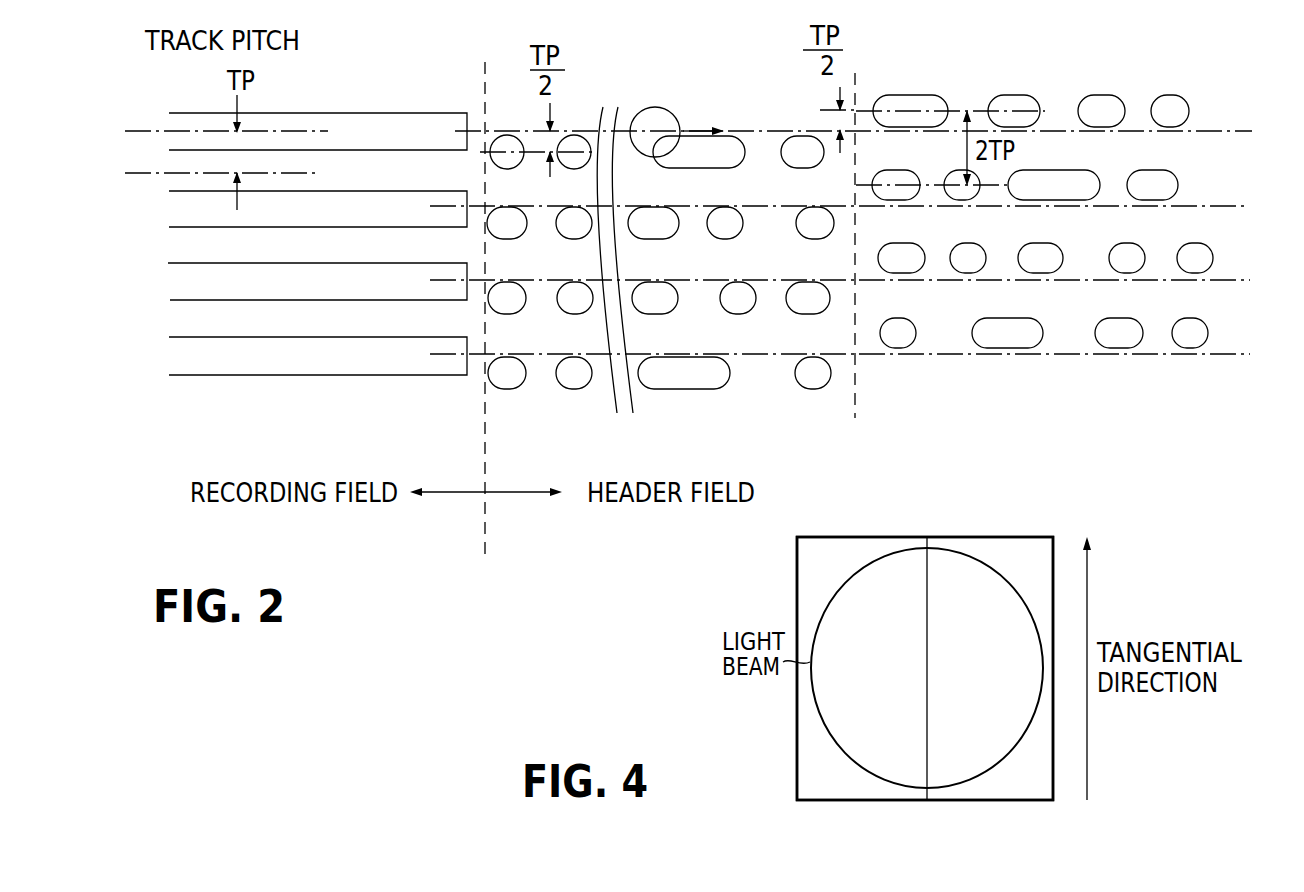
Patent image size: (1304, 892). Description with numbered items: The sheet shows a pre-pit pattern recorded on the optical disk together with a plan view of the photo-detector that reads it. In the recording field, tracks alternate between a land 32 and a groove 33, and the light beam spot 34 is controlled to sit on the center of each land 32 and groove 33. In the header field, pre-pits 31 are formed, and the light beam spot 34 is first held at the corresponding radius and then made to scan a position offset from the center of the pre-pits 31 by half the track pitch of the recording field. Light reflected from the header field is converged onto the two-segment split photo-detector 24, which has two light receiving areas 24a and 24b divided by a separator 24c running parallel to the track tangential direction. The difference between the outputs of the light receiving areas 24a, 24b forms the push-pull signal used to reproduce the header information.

In FIG. 4, the two-segment split photo-detector 24 is at (973, 537).
In FIG. 4, the light receiving area 24a is at (862, 668).
In FIG. 4, the light receiving area 24b is at (990, 668).
In FIG. 4, the separator 24c is at (922, 563).
In FIG. 2, the pre-pits 31 is at (813, 388).
In FIG. 2, the land 32 is at (437, 170).
In FIG. 2, the groove 33 is at (307, 202).
In FIG. 2, the light beam spot 34 is at (660, 107).